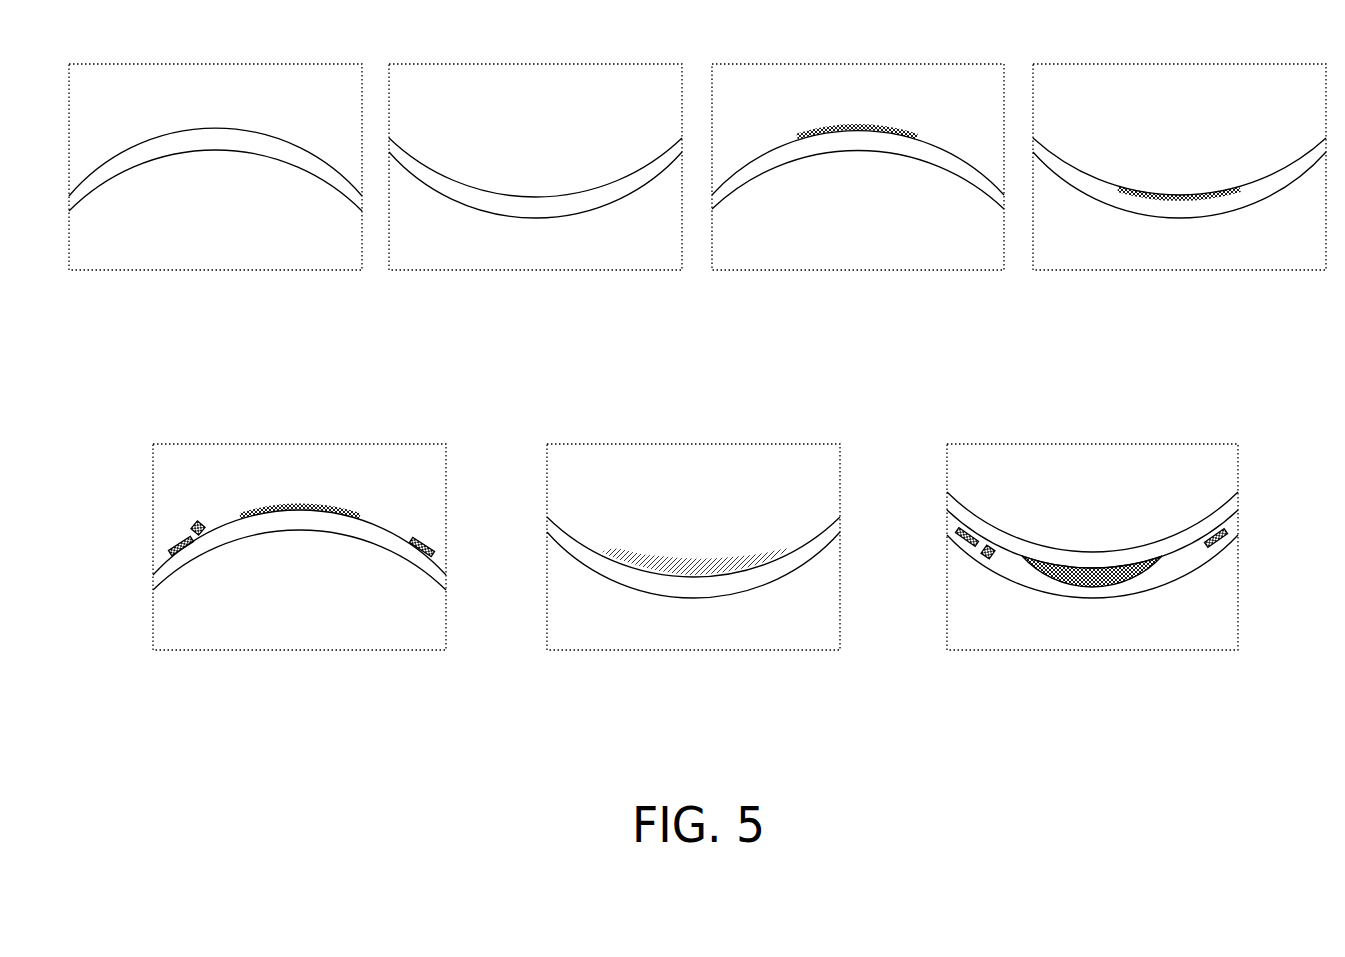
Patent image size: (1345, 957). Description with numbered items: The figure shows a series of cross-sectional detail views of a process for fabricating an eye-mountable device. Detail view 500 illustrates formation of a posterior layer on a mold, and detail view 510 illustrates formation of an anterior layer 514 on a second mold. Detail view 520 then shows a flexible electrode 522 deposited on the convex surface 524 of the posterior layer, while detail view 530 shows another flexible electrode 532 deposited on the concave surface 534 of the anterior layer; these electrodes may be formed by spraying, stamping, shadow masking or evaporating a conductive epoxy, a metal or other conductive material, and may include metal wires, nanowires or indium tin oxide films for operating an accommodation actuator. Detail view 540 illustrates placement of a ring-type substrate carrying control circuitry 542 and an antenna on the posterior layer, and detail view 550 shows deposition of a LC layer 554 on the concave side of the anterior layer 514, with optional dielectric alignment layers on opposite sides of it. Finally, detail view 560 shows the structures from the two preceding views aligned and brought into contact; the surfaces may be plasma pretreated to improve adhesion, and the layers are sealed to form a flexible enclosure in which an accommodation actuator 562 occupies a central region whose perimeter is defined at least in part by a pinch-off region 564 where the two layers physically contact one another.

The detail view 500 is at (272, 64).
The detail view 510 is at (592, 64).
The anterior layer 514 is at (538, 205).
The detail view 520 is at (915, 64).
The flexible electrode 522 is at (807, 121).
The convex surface 524 is at (960, 149).
The detail view 530 is at (1235, 64).
The flexible electrode 532 is at (1152, 183).
The concave surface 534 is at (1282, 165).
The detail view 540 is at (358, 444).
The control circuitry 542 is at (205, 515).
The detail view 550 is at (752, 444).
The LC layer 554 is at (753, 550).
The detail view 560 is at (1150, 444).
The accommodation actuator 562 is at (1104, 588).
The pinch-off region 564 is at (1182, 545).